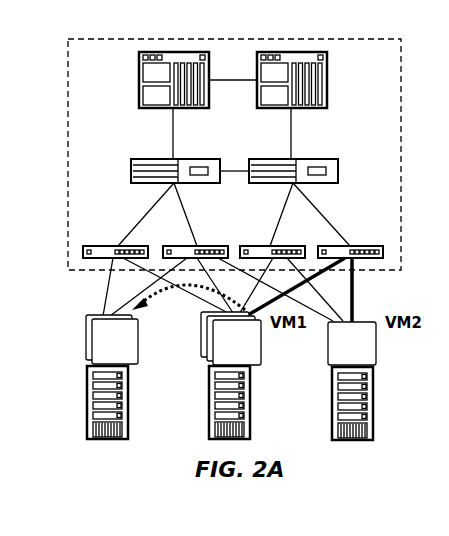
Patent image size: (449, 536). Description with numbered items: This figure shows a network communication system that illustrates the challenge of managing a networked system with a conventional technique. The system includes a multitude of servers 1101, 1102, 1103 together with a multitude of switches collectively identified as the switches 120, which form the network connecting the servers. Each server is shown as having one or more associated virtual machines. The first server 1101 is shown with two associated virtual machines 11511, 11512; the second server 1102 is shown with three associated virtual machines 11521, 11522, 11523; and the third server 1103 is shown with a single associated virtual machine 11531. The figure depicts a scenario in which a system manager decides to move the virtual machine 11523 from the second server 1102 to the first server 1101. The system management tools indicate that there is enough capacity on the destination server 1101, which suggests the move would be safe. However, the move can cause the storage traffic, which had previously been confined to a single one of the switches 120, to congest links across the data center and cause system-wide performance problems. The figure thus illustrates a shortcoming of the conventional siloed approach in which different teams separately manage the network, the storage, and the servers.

The switches 120 is at (238, 38).
The virtual machine 11511 is at (93, 348).
The virtual machine 11512 is at (86, 325).
The virtual machine 11521 is at (213, 350).
The virtual machine 11522 is at (207, 343).
The virtual machine 11523 is at (201, 323).
The virtual machine 11531 is at (376, 342).
The server 1101 is at (89, 398).
The server 1102 is at (211, 398).
The server 1103 is at (332, 398).